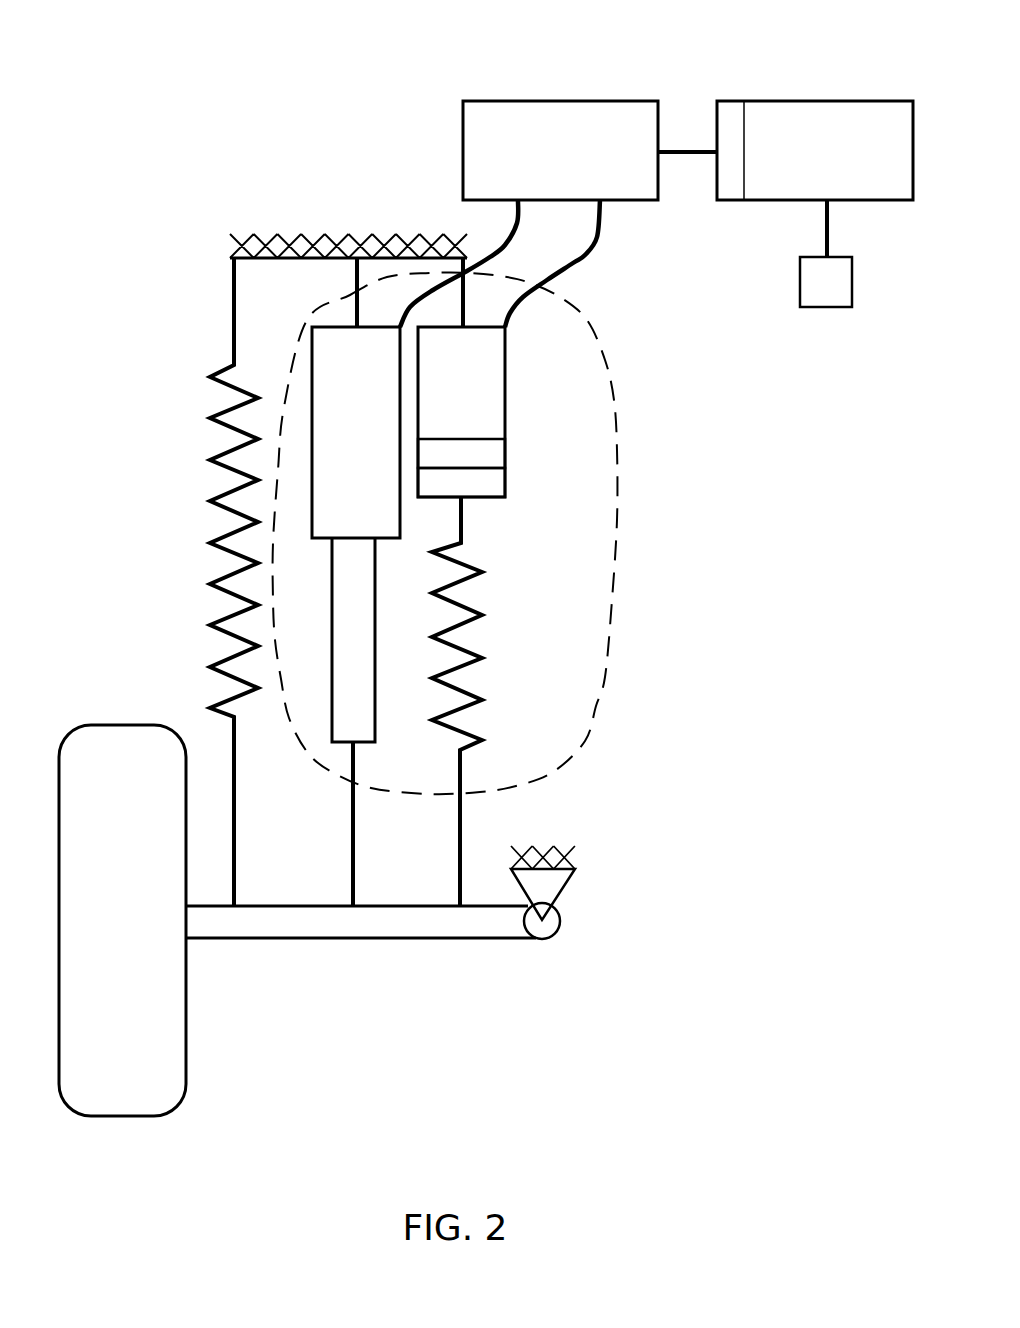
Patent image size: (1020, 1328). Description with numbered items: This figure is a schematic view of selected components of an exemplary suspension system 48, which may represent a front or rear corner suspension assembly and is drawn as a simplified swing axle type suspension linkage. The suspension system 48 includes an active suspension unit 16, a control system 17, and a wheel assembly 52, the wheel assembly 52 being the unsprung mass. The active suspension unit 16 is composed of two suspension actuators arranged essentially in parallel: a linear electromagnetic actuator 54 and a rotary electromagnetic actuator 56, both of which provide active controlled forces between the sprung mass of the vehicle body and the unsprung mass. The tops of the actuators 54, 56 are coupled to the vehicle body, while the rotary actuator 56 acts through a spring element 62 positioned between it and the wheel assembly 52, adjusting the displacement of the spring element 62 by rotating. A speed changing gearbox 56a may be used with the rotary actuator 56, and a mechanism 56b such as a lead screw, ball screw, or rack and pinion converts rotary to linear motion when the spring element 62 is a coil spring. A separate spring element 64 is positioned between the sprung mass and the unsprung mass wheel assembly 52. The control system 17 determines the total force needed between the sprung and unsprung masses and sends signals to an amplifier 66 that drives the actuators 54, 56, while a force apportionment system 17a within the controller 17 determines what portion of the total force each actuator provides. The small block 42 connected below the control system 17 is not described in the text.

The suspension system 48 is at (143, 172).
The amplifier 66 is at (552, 100).
The control system 17 is at (817, 100).
The force apportionment system 17a is at (730, 100).
The controller 42 is at (800, 285).
The active suspension unit 16 is at (619, 453).
The spring element 64 is at (215, 486).
The linear electromagnetic actuator 54 is at (312, 333).
The rotary electromagnetic actuator 56 is at (505, 375).
The speed changing gearbox 56a is at (505, 452).
The mechanism 56b is at (505, 488).
The spring element 62 is at (472, 562).
The wheel assembly 52 is at (122, 725).